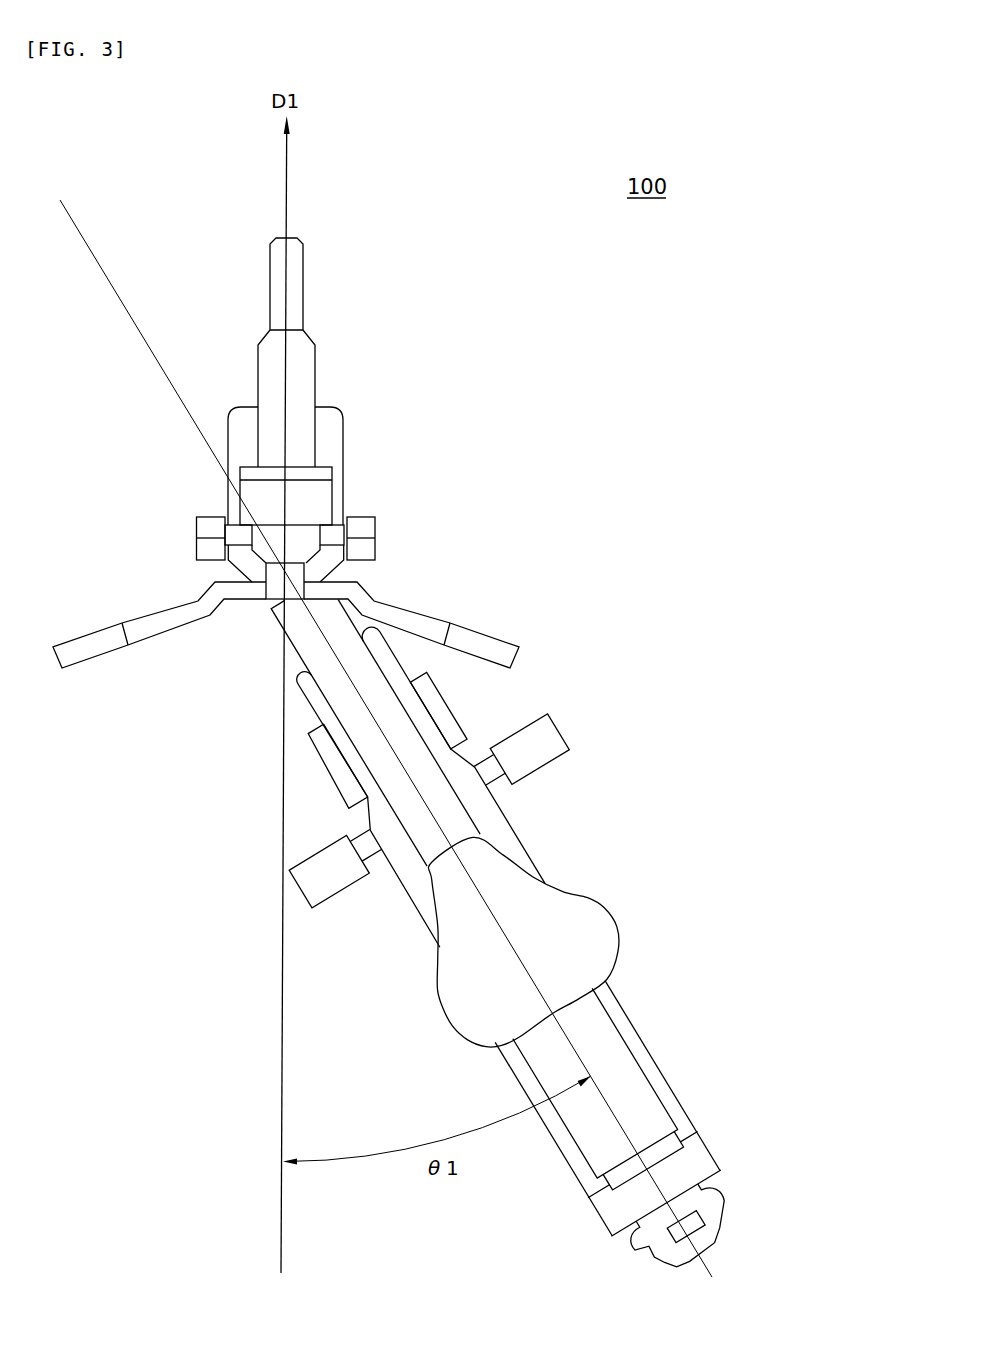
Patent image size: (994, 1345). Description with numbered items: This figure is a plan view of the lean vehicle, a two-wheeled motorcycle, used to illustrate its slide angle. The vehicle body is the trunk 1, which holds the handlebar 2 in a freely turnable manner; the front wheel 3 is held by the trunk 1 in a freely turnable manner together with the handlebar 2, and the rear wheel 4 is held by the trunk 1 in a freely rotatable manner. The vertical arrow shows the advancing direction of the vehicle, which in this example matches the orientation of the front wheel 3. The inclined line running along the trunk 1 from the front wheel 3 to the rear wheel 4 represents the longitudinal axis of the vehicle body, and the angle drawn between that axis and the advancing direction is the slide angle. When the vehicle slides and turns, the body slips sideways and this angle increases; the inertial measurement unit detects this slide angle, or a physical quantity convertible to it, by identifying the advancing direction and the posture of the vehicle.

The trunk 1 is at (590, 902).
The handlebar 2 is at (505, 643).
The front wheel 3 is at (305, 287).
The rear wheel 4 is at (719, 1208).